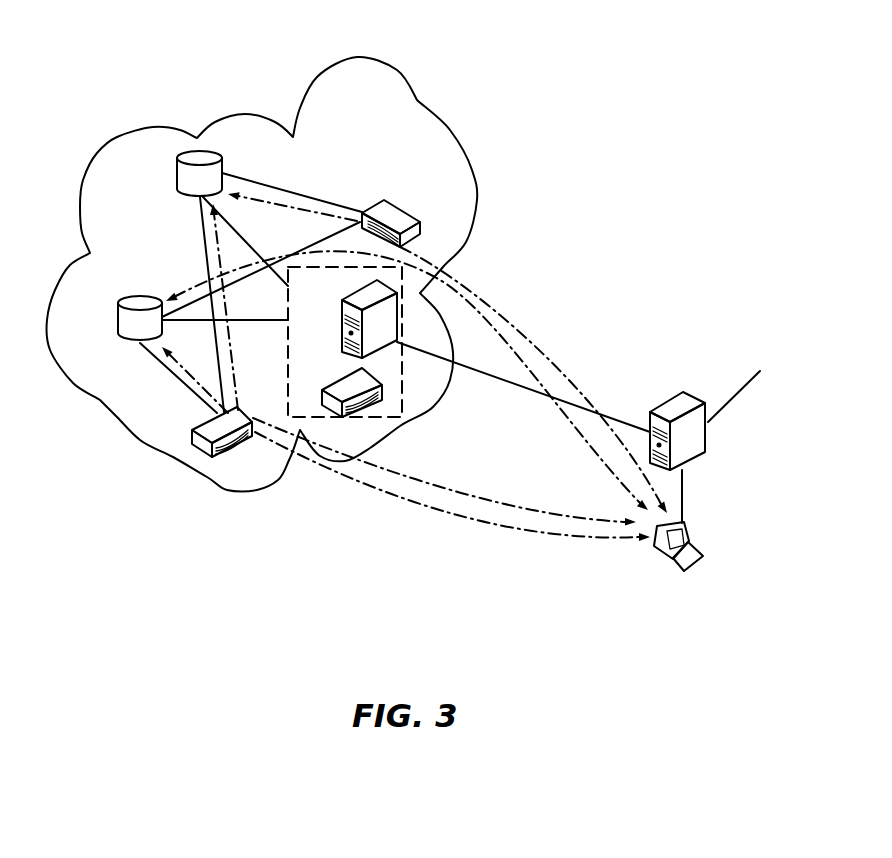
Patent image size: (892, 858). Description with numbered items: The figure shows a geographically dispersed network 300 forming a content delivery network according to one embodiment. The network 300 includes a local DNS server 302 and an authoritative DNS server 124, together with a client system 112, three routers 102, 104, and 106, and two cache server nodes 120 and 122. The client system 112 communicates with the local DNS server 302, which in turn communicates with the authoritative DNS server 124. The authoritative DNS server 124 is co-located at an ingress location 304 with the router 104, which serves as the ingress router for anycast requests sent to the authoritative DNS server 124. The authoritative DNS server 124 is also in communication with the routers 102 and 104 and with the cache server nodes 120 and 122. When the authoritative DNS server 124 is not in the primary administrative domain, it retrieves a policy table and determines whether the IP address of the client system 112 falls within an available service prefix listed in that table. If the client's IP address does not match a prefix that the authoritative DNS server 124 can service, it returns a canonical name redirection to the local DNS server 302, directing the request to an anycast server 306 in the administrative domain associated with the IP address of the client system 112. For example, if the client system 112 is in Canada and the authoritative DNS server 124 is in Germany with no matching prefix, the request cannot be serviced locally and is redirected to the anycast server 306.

The geographically dispersed network 300 is at (630, 99).
The router 102 is at (193, 430).
The router 104 is at (342, 380).
The router 106 is at (397, 210).
The client system 112 is at (683, 522).
The cache server node 120 is at (186, 156).
The cache server node 122 is at (128, 300).
The authoritative DNS server 124 is at (357, 302).
The local DNS server 302 is at (663, 415).
The ingress location 304 is at (375, 421).
The anycast server 306 is at (767, 375).